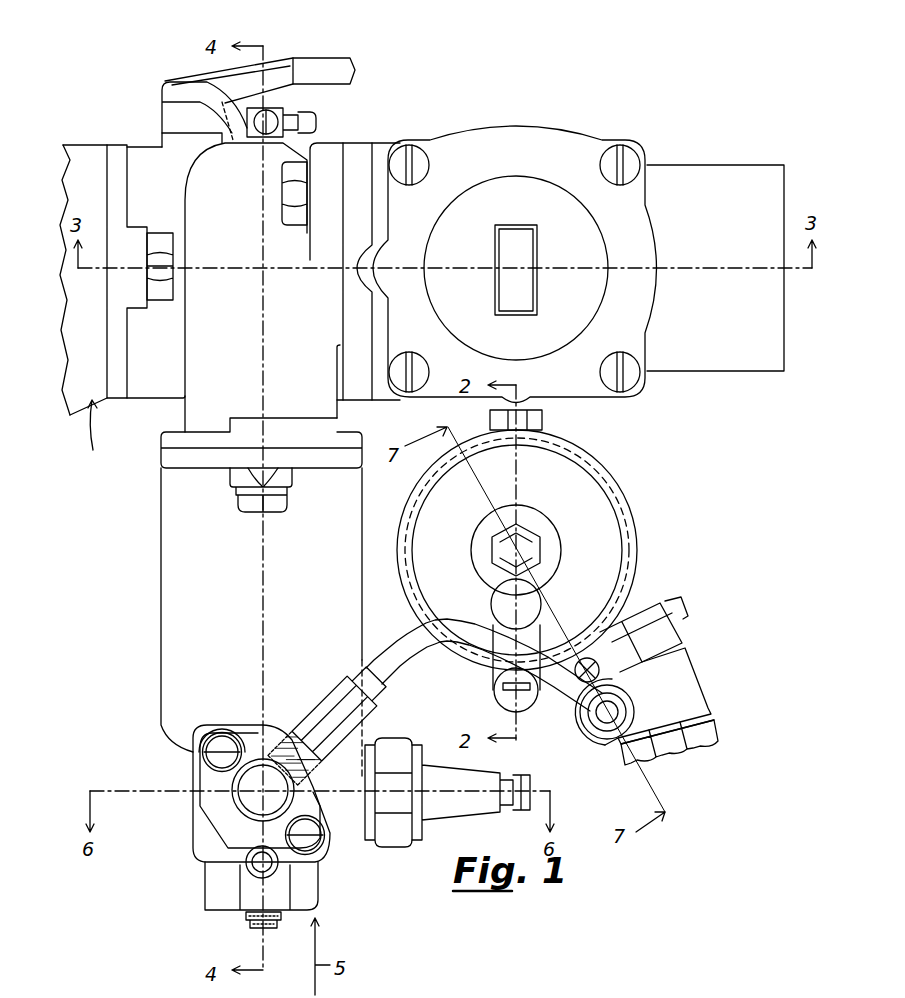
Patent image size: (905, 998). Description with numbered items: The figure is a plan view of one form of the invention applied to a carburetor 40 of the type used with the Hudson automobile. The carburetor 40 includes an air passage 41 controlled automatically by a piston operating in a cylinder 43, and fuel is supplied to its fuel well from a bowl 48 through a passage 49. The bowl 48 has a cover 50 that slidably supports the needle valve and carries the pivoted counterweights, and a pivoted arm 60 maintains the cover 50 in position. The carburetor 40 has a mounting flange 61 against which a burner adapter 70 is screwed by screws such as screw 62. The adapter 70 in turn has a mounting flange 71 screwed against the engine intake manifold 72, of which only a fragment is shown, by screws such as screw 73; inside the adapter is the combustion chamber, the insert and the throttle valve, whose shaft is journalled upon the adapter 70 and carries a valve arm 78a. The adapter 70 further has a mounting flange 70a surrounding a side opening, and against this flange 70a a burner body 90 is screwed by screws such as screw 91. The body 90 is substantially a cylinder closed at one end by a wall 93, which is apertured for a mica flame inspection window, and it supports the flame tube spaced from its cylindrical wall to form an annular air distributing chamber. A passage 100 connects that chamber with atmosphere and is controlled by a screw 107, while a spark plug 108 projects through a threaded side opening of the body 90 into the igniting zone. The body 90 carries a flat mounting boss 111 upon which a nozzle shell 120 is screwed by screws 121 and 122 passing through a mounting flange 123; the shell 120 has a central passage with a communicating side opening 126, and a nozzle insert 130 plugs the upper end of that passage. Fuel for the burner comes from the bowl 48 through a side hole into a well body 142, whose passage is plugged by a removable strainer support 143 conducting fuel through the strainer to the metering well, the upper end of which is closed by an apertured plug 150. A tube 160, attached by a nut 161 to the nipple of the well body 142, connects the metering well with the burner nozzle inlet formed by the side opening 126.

The carburetor 40 is at (616, 114).
The air passage 41 is at (750, 350).
The cylinder 43 is at (505, 138).
The bowl 48 is at (640, 547).
The passage 49 is at (545, 422).
The cover 50 is at (565, 492).
The pivoted arm 60 is at (500, 608).
The mounting flange 61 is at (363, 157).
The screw 62 is at (292, 222).
The burner adapter 70 is at (163, 172).
The mounting flange 70a is at (177, 440).
The mounting flange 71 is at (118, 208).
The engine intake manifold 72 is at (86, 392).
The screw 73 is at (157, 302).
The valve arm 78a is at (330, 70).
The burner body 90 is at (176, 612).
The screw 91 is at (250, 504).
The wall 93 is at (300, 912).
The passage 100 is at (261, 808).
The screw 107 is at (250, 924).
The spark plug 108 is at (453, 808).
The flat mounting boss 111 is at (212, 822).
The nozzle shell 120 is at (247, 826).
The screw 121 is at (223, 746).
The screw 122 is at (315, 844).
The mounting flange 123 is at (214, 797).
The side opening 126 is at (285, 726).
The nozzle insert 130 is at (250, 784).
The well body 142 is at (670, 687).
The strainer support 143 is at (688, 737).
The apertured plug 150 is at (644, 629).
The tube 160 is at (568, 690).
The nut 161 is at (613, 737).